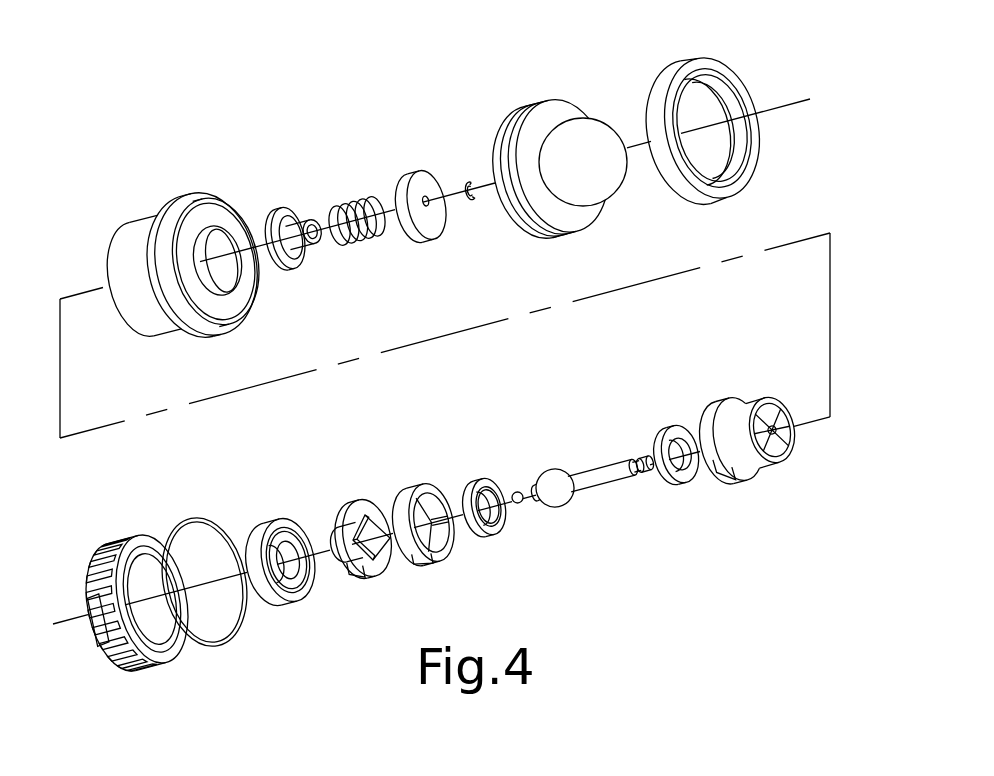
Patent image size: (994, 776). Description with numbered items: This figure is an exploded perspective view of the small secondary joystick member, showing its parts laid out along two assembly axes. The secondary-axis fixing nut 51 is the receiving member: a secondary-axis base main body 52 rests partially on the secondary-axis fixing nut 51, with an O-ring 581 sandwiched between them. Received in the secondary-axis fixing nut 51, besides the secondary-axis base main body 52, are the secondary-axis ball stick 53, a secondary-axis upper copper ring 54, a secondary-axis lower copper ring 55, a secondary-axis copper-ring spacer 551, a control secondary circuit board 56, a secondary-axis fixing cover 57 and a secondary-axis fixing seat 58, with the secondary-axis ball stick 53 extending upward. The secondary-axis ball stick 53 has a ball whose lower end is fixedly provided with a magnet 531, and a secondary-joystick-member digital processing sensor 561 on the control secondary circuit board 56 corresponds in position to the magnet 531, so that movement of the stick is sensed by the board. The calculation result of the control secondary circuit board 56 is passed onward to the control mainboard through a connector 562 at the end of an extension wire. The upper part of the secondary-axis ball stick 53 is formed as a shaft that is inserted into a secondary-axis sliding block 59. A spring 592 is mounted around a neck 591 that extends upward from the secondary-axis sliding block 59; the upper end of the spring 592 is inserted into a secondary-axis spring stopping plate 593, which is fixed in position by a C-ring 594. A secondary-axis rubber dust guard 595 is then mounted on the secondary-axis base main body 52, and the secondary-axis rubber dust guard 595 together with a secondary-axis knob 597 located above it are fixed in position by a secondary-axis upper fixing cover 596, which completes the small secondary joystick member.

The secondary-axis fixing nut 51 is at (122, 533).
The secondary-axis base main body 52 is at (195, 192).
The secondary-axis ball stick 53 is at (595, 477).
The magnet 531 is at (517, 493).
The secondary-axis upper copper ring 54 is at (663, 438).
The secondary-axis lower copper ring 55 is at (473, 478).
The secondary-axis copper-ring spacer 551 is at (407, 498).
The control secondary circuit board 56 is at (343, 500).
The secondary-joystick-member digital processing sensor 561 is at (368, 517).
The connector 562 is at (325, 533).
The secondary-axis fixing cover 57 is at (268, 518).
The secondary-axis fixing seat 58 is at (742, 407).
The O-ring 581 is at (203, 513).
The secondary-axis sliding block 59 is at (287, 208).
The neck 591 is at (312, 220).
The spring 592 is at (348, 202).
The secondary-axis spring stopping plate 593 is at (427, 180).
The C-ring 594 is at (468, 180).
The secondary-axis rubber dust guard 595 is at (518, 120).
The secondary-axis upper fixing cover 596 is at (663, 68).
The secondary-axis knob 597 is at (590, 120).